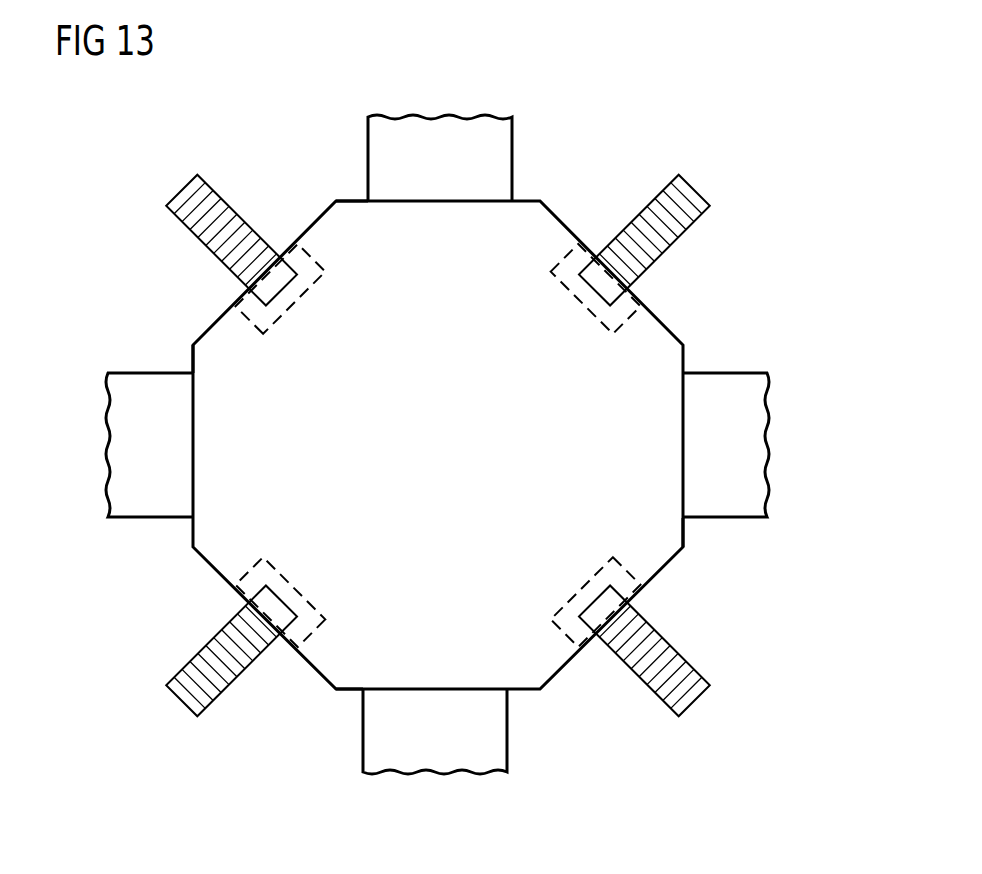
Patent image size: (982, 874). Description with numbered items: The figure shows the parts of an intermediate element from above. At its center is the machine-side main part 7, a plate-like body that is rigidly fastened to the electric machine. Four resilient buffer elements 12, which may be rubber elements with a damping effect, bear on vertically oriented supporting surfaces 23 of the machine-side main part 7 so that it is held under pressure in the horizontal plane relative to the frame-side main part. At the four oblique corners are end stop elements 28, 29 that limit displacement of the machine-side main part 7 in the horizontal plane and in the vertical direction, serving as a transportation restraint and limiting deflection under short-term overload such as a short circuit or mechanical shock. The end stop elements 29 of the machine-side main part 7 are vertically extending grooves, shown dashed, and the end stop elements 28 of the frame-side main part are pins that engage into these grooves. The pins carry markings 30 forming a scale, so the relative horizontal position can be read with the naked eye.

The machine-side main part 7 is at (448, 459).
The buffer element 12 is at (437, 118).
The supporting surface 23 is at (340, 198).
The end stop element 28 is at (186, 190).
The end stop element 29 is at (293, 304).
The marking 30 is at (237, 214).